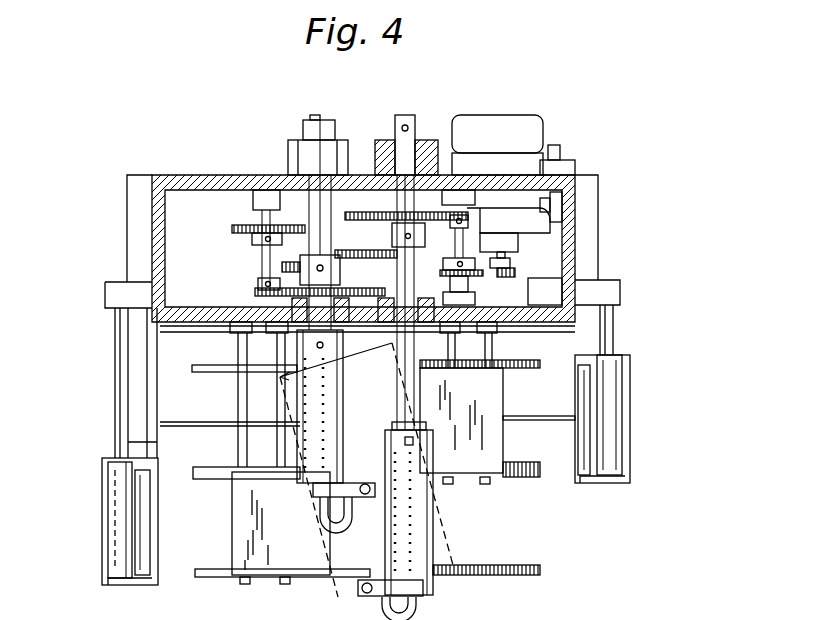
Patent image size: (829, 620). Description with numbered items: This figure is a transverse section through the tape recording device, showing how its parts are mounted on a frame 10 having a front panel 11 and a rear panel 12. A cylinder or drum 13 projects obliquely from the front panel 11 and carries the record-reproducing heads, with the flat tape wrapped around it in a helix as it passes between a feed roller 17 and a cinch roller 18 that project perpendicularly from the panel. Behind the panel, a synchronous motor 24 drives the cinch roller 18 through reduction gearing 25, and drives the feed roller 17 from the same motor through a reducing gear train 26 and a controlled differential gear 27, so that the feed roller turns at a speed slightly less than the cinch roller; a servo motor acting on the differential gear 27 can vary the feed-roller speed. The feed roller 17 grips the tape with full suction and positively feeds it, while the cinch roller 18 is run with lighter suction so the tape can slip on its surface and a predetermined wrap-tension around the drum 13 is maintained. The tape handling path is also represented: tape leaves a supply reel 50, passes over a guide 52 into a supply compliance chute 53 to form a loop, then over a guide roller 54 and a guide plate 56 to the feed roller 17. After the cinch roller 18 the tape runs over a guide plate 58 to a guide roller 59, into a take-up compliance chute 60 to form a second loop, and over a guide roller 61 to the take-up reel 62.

The frame 10 is at (90, 214).
The front panel 11 is at (575, 328).
The rear panel 12 is at (540, 181).
The cylinder or drum 13 is at (345, 588).
The feed roller 17 is at (303, 398).
The cinch roller 18 is at (415, 527).
The synchronous motor 24 is at (527, 127).
The reduction gearing 25 is at (438, 202).
The reducing gear train 26 is at (273, 271).
The controlled differential gear 27 is at (298, 245).
The reel 50 is at (213, 358).
The guide 52 is at (578, 436).
The supply compliance chute 53 is at (640, 470).
The guide roller 54 is at (610, 434).
The guide plate 56 is at (485, 403).
The guide plate 58 is at (245, 518).
The guide roller 59 is at (118, 516).
The take-up compliance chute 60 is at (93, 547).
The guide roller 61 is at (140, 556).
The take-up reel 62 is at (505, 576).